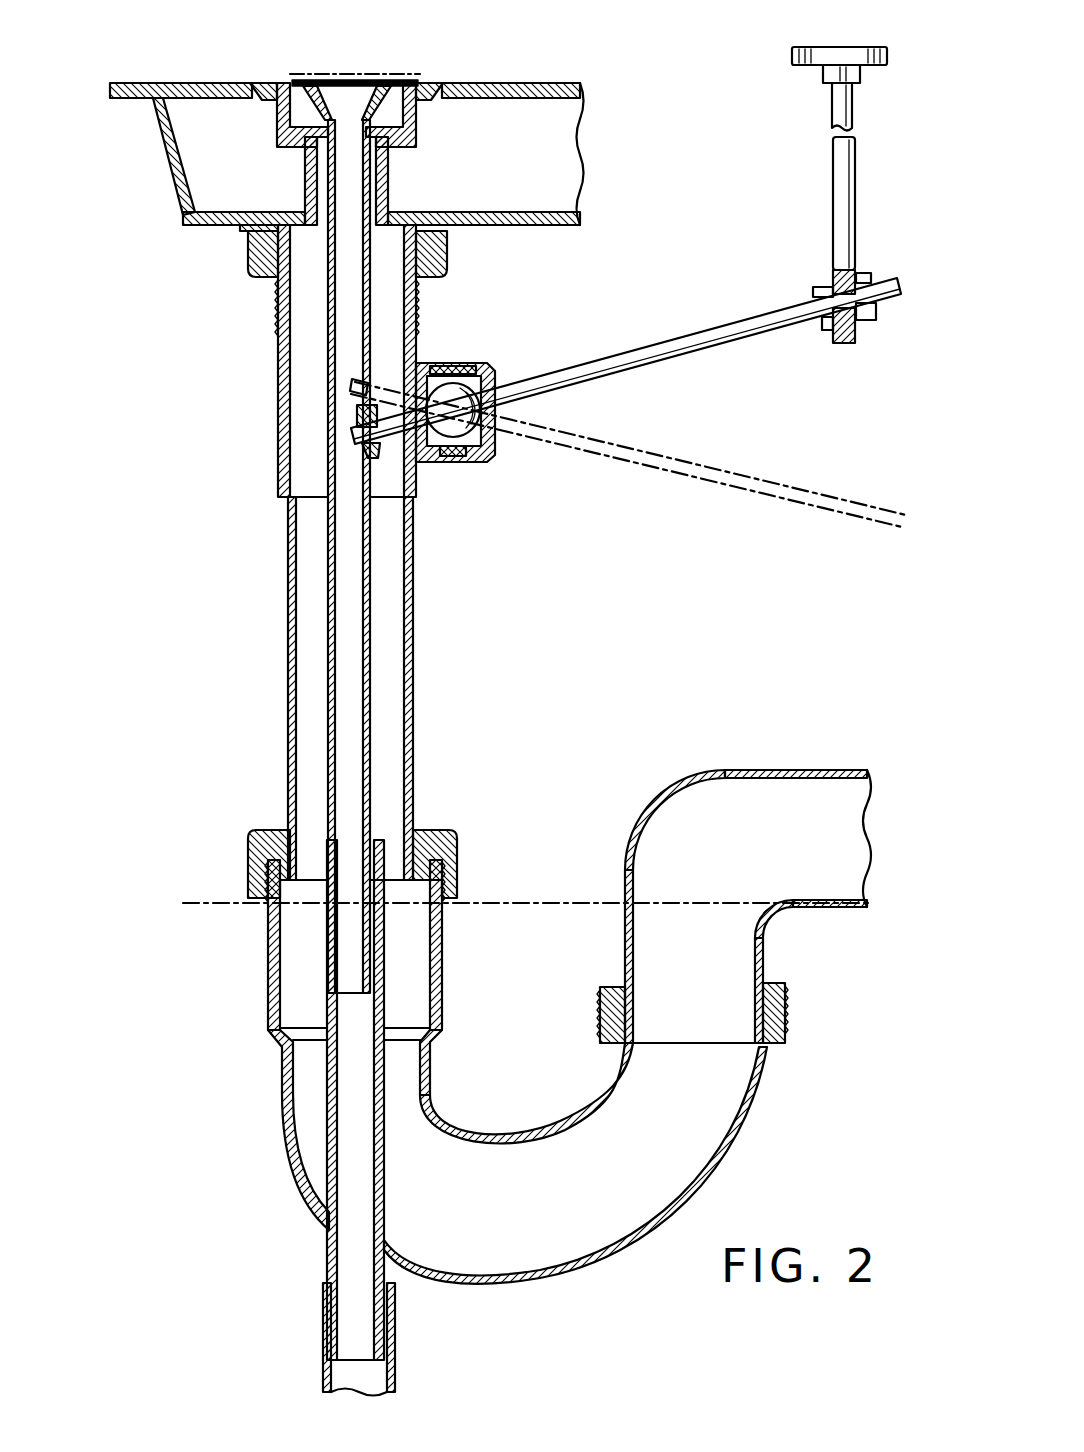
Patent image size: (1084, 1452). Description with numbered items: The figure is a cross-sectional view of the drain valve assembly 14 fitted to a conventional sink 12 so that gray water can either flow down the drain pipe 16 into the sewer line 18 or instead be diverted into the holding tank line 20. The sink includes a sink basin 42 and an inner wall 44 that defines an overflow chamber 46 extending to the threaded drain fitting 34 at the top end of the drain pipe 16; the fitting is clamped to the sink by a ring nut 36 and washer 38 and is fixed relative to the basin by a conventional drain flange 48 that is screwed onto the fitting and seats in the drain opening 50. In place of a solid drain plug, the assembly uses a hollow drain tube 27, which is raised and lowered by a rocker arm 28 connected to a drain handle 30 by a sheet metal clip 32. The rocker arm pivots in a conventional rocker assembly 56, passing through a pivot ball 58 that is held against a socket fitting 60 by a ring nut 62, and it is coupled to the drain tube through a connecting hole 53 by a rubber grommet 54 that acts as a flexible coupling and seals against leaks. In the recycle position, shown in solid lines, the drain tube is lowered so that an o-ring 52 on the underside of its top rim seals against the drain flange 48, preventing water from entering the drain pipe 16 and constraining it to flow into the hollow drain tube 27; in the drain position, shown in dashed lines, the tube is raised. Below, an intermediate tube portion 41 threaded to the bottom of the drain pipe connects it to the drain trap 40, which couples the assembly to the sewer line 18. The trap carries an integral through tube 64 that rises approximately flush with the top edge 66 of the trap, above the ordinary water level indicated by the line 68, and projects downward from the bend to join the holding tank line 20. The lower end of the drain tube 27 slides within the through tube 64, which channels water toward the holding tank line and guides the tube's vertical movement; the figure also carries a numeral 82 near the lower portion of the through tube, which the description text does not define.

The sink 12 is at (479, 56).
The drain valve assembly 14 is at (200, 488).
The drain pipe 16 is at (280, 446).
The sewer line 18 is at (625, 940).
The holding tank line 20 is at (323, 1325).
The hollow drain tube 27 is at (360, 79).
The rocker arm 28 is at (681, 339).
The drain handle 30 is at (833, 162).
The sheet metal clip 32 is at (814, 292).
The threaded drain fitting 34 is at (388, 176).
The ring nut 36 is at (256, 262).
The washer 38 is at (240, 235).
The drain trap 40 is at (605, 1260).
The intermediate tube portion 41 is at (288, 566).
The sink basin 42 is at (216, 83).
The inner wall 44 is at (514, 212).
The overflow chamber 46 is at (513, 154).
The drain flange 48 is at (412, 84).
The drain opening 50 is at (283, 107).
The o-ring 52 is at (300, 96).
The connecting hole 53 is at (368, 445).
The rubber grommet 54 is at (375, 410).
The rocker assembly 56 is at (455, 362).
The pivot ball 58 is at (483, 456).
The socket fitting 60 is at (447, 366).
The ring nut 62 is at (456, 463).
The through tube 64 is at (328, 1083).
The top edge 66 is at (430, 832).
The line 68 is at (472, 903).
The inner tube 82 is at (327, 1258).